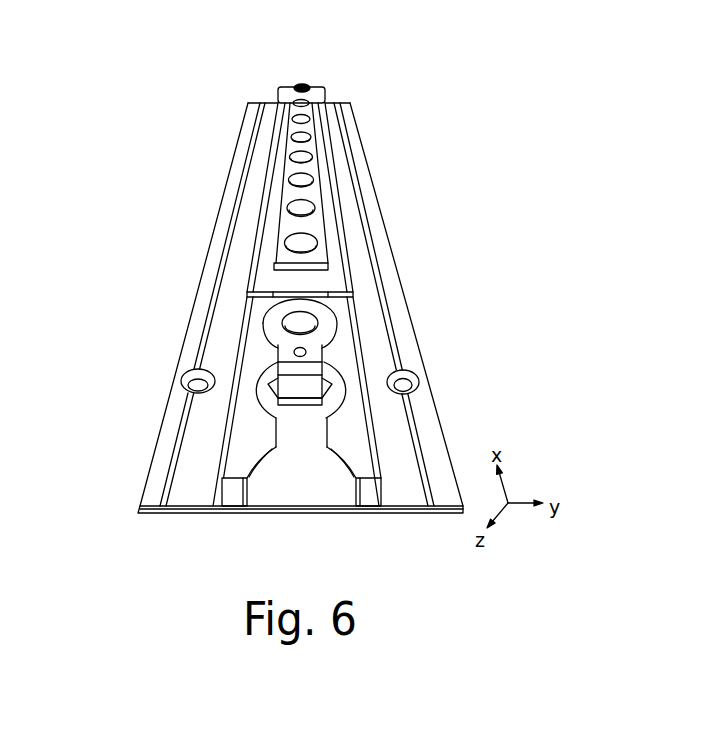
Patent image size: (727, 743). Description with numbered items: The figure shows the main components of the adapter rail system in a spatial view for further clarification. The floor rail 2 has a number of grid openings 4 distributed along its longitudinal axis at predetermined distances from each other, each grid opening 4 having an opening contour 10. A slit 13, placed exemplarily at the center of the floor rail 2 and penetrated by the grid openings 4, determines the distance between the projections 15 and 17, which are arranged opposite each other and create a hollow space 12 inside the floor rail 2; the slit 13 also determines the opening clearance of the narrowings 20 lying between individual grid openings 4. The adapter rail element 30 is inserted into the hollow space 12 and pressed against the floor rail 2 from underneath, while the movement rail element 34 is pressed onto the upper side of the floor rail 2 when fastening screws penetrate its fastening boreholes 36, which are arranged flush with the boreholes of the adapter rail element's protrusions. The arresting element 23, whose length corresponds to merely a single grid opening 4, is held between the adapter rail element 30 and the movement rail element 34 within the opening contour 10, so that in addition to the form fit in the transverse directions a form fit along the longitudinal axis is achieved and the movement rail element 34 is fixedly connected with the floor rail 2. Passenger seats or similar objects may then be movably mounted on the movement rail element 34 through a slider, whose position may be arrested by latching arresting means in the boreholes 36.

The floor rail 2 is at (363, 187).
The grid openings 4 is at (317, 413).
The opening contour 10 is at (325, 435).
The hollow space 12 is at (313, 472).
The slit 13 is at (295, 448).
The projection 15 is at (257, 340).
The projection 17 is at (348, 343).
The narrowings 20 is at (277, 353).
The arresting element 23 is at (324, 327).
The adapter rail element 30 is at (313, 388).
The movement rail element 34 is at (323, 142).
The fastening boreholes 36 is at (310, 88).